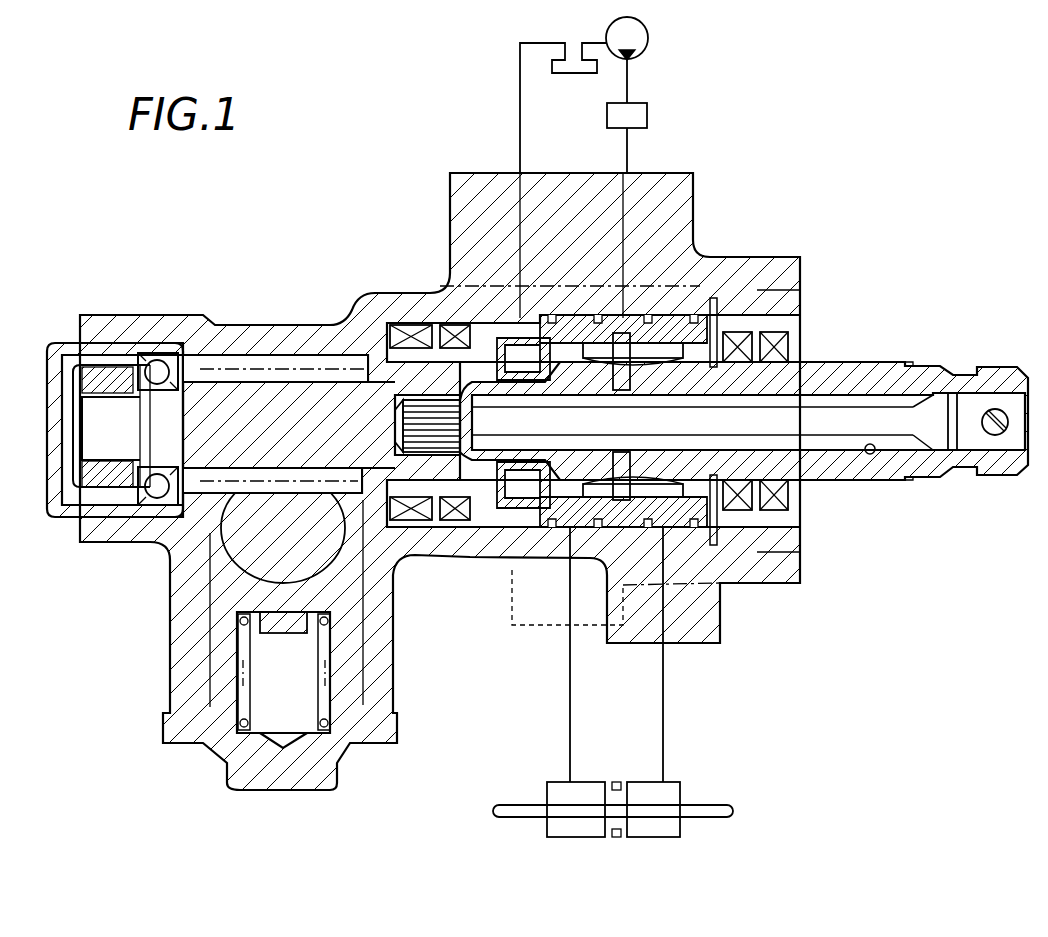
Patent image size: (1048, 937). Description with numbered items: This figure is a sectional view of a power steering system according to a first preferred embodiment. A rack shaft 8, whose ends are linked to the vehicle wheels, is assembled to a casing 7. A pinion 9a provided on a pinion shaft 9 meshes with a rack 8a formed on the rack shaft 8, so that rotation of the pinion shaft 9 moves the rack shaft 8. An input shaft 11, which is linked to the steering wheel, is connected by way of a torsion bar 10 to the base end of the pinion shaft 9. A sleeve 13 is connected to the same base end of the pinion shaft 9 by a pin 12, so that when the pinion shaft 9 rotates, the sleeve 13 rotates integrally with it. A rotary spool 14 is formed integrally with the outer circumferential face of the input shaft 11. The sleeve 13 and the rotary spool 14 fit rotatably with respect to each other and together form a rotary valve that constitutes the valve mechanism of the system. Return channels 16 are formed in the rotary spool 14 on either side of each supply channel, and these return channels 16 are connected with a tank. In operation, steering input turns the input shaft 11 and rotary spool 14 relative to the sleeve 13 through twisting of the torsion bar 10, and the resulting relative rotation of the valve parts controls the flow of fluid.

The casing 7 is at (373, 313).
The rack shaft 8 is at (243, 545).
The rack 8a is at (315, 470).
The pinion shaft 9 is at (295, 392).
The pinion 9a is at (233, 366).
The torsion bar 10 is at (840, 418).
The input shaft 11 is at (948, 377).
The pin 12 is at (516, 515).
The sleeve 13 is at (672, 316).
The rotary spool 14 is at (668, 345).
The return channels 16 is at (872, 455).